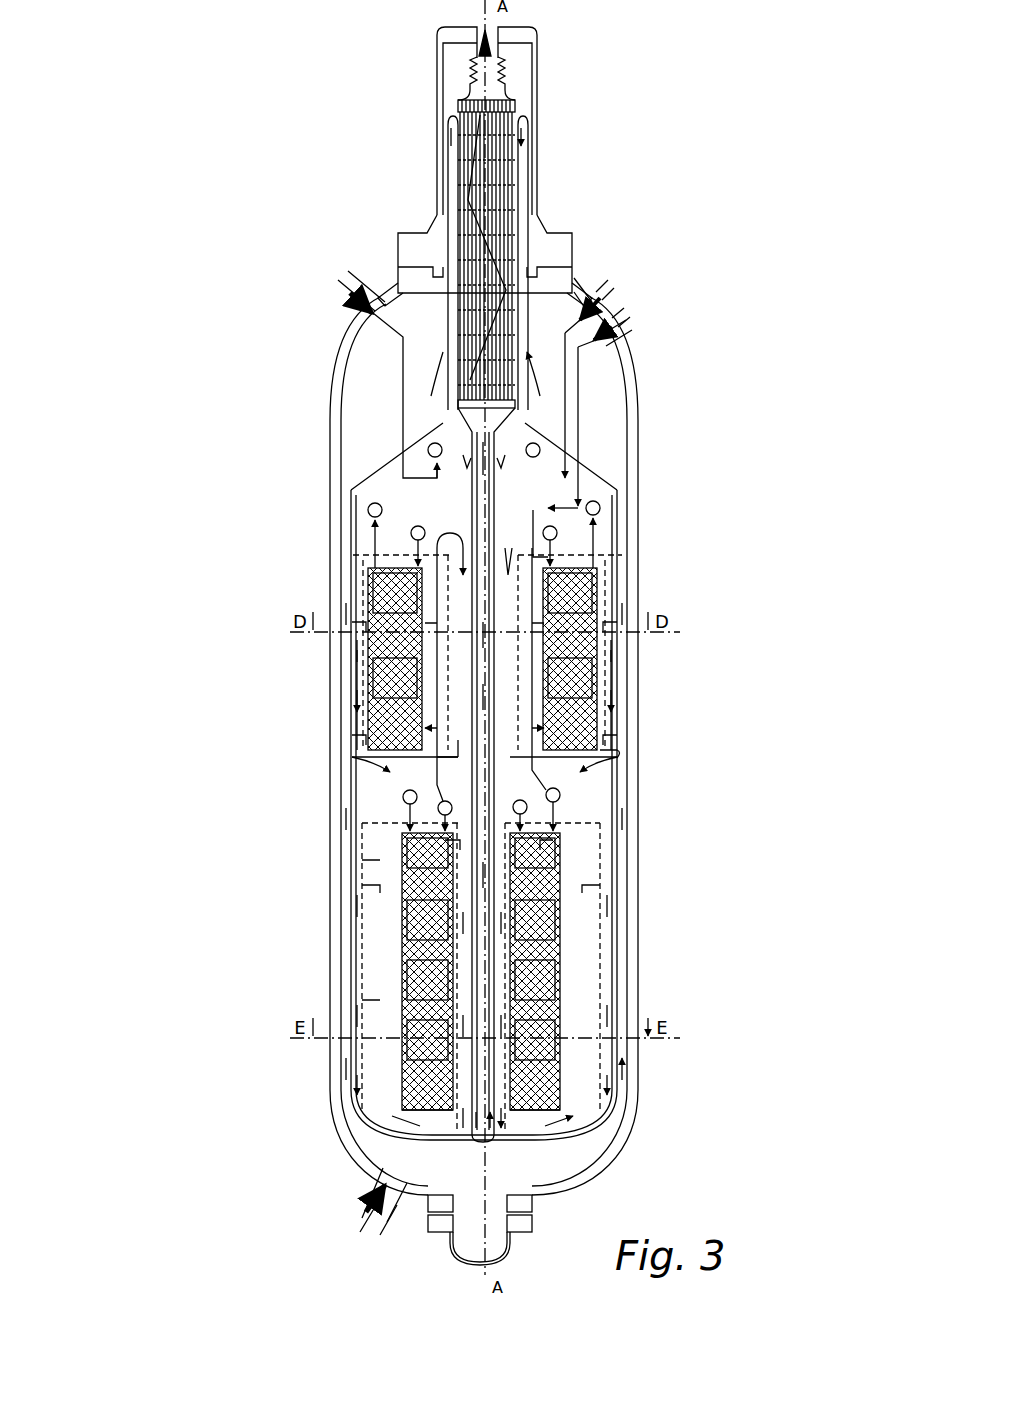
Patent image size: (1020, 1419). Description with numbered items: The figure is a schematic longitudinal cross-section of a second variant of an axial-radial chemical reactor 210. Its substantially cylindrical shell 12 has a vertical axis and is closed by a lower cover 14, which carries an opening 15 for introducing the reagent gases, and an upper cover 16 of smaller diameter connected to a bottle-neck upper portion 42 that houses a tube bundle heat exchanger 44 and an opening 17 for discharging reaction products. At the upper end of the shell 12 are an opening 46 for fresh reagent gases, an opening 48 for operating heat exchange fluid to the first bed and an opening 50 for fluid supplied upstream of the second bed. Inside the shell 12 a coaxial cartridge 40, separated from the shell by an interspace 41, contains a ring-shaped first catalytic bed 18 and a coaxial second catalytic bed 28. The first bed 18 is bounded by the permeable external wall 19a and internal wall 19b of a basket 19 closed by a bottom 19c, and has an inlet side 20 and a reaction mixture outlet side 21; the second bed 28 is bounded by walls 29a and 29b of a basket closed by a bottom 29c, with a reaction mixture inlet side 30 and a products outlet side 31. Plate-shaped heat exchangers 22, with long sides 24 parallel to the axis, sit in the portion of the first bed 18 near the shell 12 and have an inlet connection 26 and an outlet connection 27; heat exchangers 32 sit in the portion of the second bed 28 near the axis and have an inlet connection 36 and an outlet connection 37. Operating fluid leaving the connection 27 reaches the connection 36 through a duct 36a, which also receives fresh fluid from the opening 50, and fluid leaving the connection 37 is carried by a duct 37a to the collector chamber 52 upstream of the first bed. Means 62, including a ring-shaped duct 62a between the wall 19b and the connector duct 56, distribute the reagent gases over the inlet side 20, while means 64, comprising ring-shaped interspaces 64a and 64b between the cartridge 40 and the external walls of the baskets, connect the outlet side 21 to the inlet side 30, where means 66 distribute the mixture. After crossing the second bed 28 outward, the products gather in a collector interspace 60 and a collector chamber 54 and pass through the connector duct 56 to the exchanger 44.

The chemical reactor 210 is at (160, 296).
The shell 12 is at (334, 804).
The lower cover 14 is at (408, 1208).
The opening 15 is at (372, 1196).
The upper cover 16 is at (386, 284).
The opening 17 is at (492, 26).
The first catalytic bed 18 is at (350, 687).
The basket 19 is at (604, 722).
The external wall 19a is at (362, 720).
The internal wall 19b is at (600, 688).
The bottom 19c is at (376, 768).
The inlet side 20 is at (433, 588).
The reaction mixture outlet side 21 is at (352, 645).
The heat exchangers 22 is at (570, 690).
The long sides 24 is at (600, 590).
The inlet connection 26 is at (601, 508).
The outlet connection 27 is at (600, 540).
The second catalytic bed 28 is at (368, 962).
The external wall 29a is at (366, 994).
The internal wall 29b is at (588, 916).
The bottom 29c is at (556, 1142).
The reaction mixture inlet side 30 is at (530, 955).
The reaction gaseous products outlet side 31 is at (582, 893).
The heat exchangers 32 is at (575, 970).
The inlet connection 36 is at (612, 815).
The duct 36a is at (622, 645).
The outlet connection 37 is at (580, 838).
The duct 37a is at (367, 510).
The cartridge 40 is at (362, 443).
The interspace 41 is at (346, 845).
The upper portion 42 is at (437, 134).
The tube bundle heat exchanger 44 is at (515, 110).
The opening 46 is at (340, 296).
The opening 48 is at (614, 300).
The opening 50 is at (640, 328).
The collector chamber 52 is at (403, 435).
The collector chamber 54 is at (468, 944).
The connector duct 56 is at (550, 428).
The collector interspace 60 is at (430, 1140).
The means for distributing the reagent gases 62 is at (503, 582).
The ring-shaped duct 62a is at (582, 478).
The means for putting in fluid communication 64 is at (432, 766).
The ring-shaped interspace 64a is at (612, 756).
The ring-shaped interspace 64b is at (398, 862).
The means for distributing the reaction mixture 66 is at (470, 888).